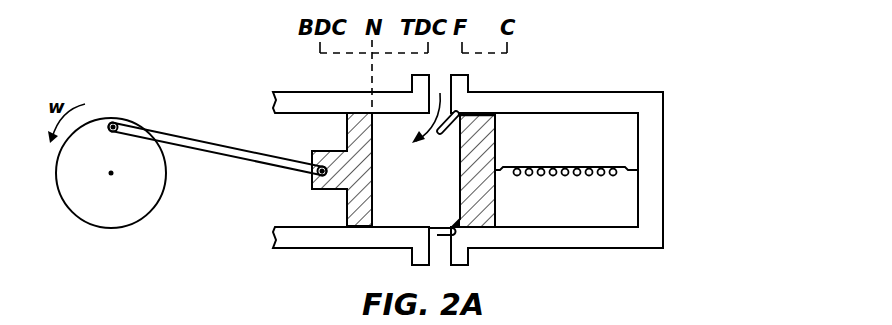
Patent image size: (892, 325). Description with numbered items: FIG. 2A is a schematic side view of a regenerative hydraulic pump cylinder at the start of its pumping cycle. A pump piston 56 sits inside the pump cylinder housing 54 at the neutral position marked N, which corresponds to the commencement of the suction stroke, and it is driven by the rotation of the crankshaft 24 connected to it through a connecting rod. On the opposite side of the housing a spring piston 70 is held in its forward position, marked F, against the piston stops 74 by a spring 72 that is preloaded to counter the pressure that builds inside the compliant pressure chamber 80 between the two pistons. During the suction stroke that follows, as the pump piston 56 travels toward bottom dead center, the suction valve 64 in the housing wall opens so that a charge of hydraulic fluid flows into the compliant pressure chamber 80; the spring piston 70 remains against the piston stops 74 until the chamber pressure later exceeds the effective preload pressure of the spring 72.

The crankshaft 24 is at (85, 205).
The pump cylinder housing 54 is at (647, 125).
The pump piston 56 is at (353, 208).
The suction valve 64 is at (458, 126).
The spring piston 70 is at (483, 127).
The spring 72 is at (592, 175).
The piston stops 74 is at (440, 202).
The compliant pressure chamber 80 is at (462, 233).